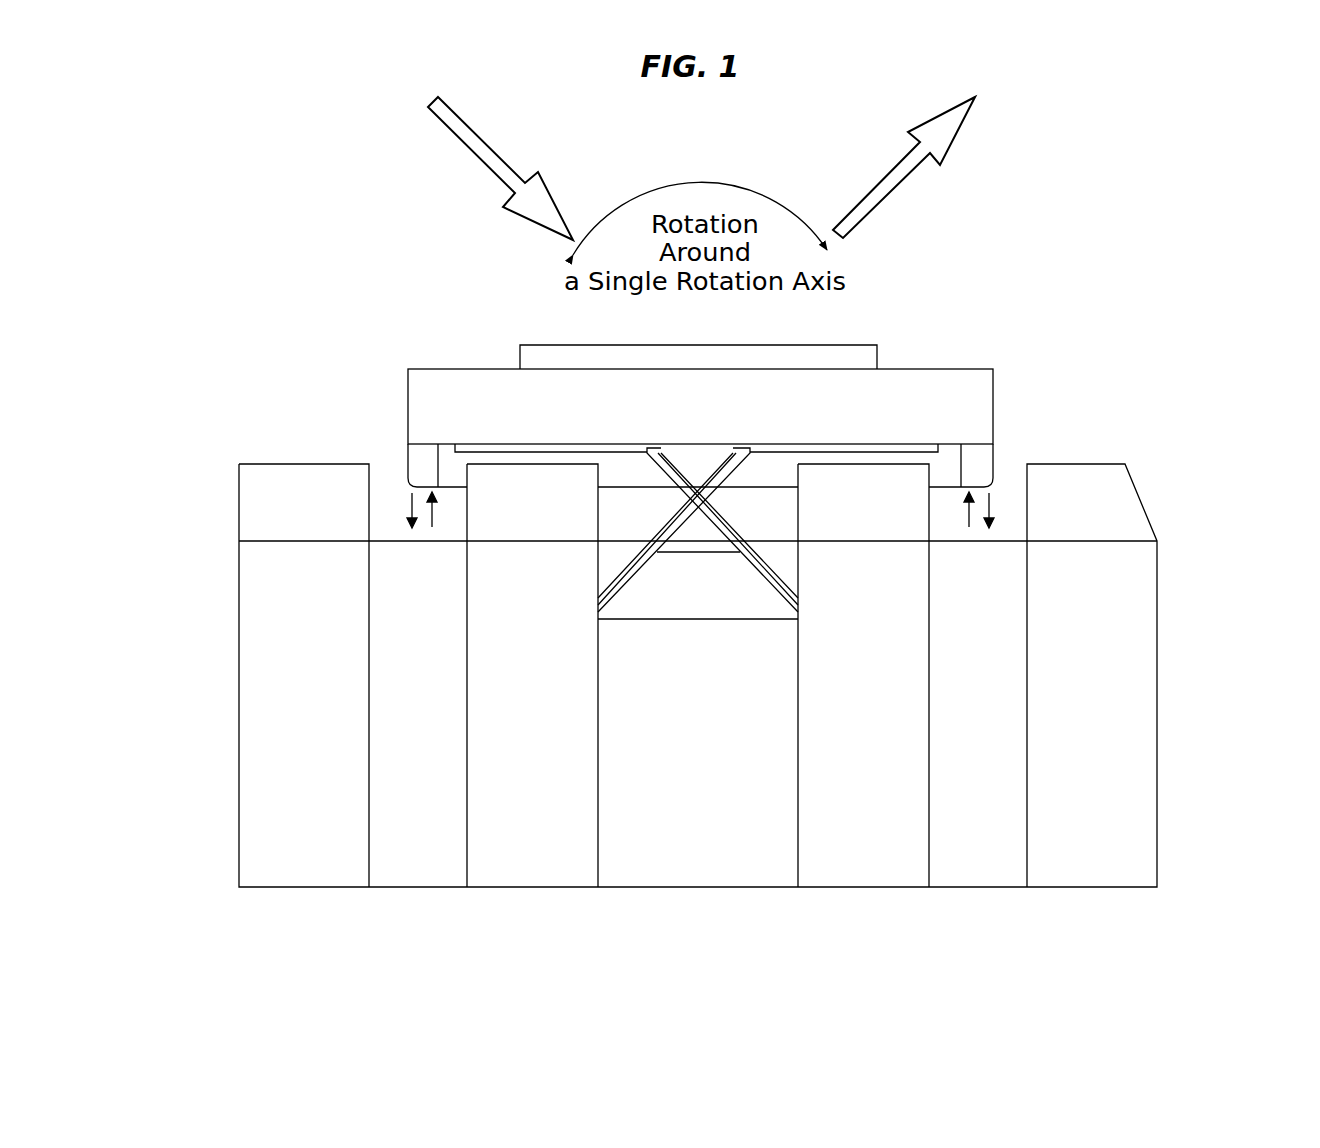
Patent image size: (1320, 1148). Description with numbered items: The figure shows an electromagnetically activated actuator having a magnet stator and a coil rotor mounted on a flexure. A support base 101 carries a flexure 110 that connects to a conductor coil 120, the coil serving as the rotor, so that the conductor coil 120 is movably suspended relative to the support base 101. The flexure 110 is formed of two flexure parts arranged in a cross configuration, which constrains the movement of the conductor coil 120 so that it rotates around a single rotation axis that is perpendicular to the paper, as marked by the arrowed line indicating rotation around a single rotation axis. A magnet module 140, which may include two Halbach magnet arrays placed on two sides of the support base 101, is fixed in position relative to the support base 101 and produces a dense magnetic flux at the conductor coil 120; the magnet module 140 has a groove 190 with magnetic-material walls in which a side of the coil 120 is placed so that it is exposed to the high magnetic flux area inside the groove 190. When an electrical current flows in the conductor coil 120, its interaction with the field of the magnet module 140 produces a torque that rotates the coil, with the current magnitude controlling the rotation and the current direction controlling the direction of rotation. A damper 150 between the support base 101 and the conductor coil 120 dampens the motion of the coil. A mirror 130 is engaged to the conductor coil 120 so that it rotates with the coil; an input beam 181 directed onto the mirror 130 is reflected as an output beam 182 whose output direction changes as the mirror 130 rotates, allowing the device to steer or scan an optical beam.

The support base 101 is at (690, 688).
The flexure 110 is at (649, 569).
The conductor coil 120 is at (416, 474).
The mirror 130 is at (941, 388).
The magnet module 140 is at (253, 541).
The damper 150 is at (544, 362).
The input beam 181 is at (483, 163).
The output beam 182 is at (890, 195).
The groove 190 is at (389, 503).